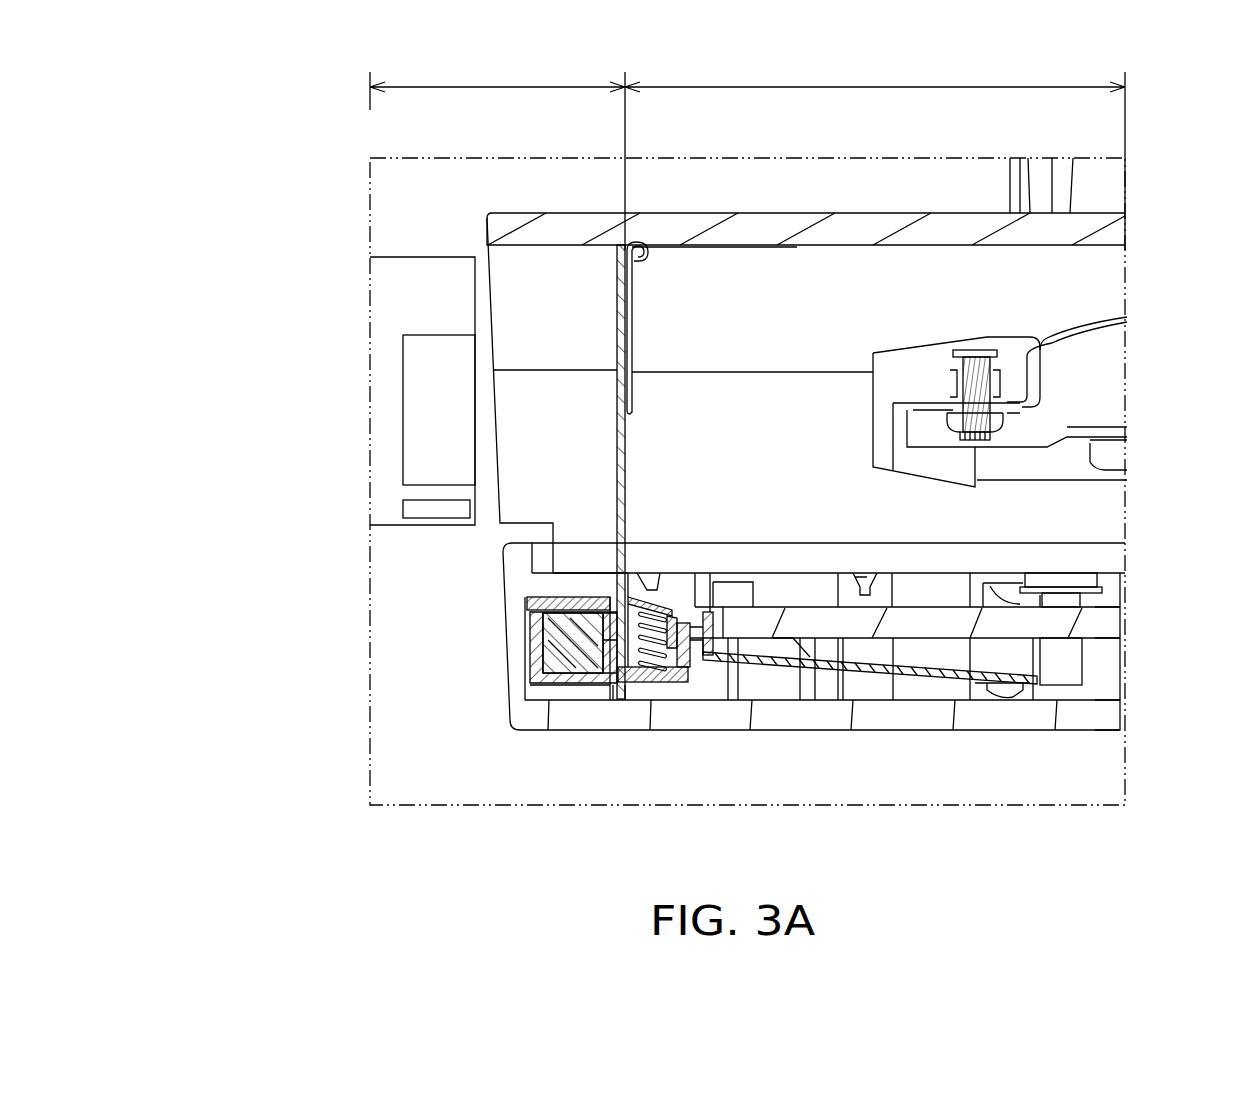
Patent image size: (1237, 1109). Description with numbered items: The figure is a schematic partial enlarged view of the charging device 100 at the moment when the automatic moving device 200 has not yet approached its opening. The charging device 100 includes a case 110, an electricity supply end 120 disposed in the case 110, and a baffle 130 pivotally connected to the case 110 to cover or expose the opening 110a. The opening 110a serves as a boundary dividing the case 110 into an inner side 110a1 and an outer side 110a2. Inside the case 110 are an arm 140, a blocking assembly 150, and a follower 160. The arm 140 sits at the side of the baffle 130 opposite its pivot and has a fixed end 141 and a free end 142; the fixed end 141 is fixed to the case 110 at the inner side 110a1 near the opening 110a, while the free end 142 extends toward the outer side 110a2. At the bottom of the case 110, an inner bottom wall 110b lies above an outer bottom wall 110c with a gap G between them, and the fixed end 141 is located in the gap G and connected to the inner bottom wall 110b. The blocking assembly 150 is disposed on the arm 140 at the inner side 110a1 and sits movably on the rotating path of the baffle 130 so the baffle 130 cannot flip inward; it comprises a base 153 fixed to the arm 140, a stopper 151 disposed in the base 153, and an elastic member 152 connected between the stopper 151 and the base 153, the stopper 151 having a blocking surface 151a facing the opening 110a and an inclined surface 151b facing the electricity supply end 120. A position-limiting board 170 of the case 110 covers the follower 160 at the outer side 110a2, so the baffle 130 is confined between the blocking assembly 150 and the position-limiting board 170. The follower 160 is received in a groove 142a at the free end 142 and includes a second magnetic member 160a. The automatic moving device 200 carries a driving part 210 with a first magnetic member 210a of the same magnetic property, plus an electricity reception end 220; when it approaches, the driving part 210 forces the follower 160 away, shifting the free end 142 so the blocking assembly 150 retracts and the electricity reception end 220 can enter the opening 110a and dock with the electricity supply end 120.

The charging device 100 is at (1158, 157).
The case 110 is at (800, 222).
The opening 110a is at (595, 600).
The inner side 110a1 is at (875, 155).
The outer side 110a2 is at (497, 85).
The inner bottom wall 110b is at (1102, 627).
The outer bottom wall 110c is at (1102, 718).
The electricity supply end 120 is at (1013, 342).
The baffle 130 is at (618, 277).
The arm 140 is at (850, 670).
The fixed end 141 is at (1002, 673).
The free end 142 is at (608, 677).
The groove 142a is at (545, 640).
The blocking assembly 150 is at (303, 577).
The stopper 151 is at (615, 622).
The blocking surface 151a is at (617, 612).
The inclined surface 151b is at (657, 600).
The elastic member 152 is at (600, 632).
The base 153 is at (560, 642).
The follower 160 is at (555, 734).
The second magnetic member 160a is at (567, 685).
The position-limiting board 170 is at (575, 603).
The automatic moving device 200 is at (346, 386).
The driving part 210 is at (322, 489).
The first magnetic member 210a is at (412, 508).
The electricity reception end 220 is at (415, 437).
The gap G is at (1112, 671).